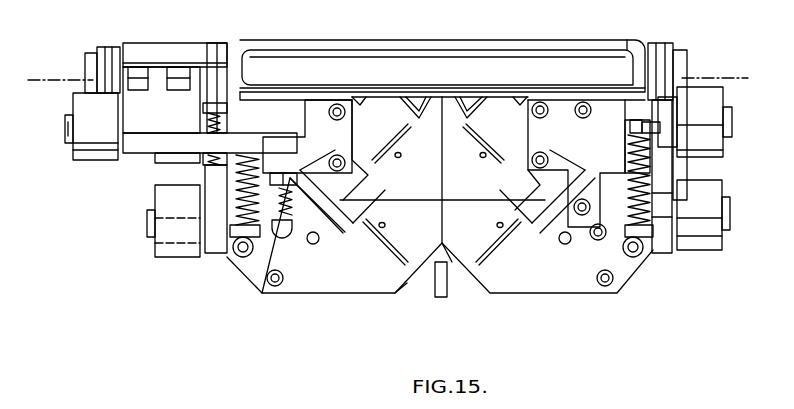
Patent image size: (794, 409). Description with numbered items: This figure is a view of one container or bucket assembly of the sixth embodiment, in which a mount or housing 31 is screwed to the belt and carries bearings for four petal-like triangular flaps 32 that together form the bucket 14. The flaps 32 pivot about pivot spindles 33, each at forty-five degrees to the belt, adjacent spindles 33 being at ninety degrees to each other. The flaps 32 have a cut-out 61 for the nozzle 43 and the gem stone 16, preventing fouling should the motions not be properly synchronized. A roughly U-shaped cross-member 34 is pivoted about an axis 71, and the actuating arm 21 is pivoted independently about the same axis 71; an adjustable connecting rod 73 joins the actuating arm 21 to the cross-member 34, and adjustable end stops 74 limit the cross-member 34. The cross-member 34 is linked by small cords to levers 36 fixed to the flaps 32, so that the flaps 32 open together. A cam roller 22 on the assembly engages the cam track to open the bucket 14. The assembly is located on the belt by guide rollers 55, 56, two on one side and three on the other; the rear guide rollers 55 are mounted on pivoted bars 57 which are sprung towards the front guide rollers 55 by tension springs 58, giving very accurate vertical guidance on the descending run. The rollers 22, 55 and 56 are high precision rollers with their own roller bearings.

The bucket 14 is at (502, 302).
The gem stone 16 is at (453, 265).
The actuating arm 21 is at (142, 143).
The cam roller 22 is at (90, 143).
The mount or housing 31 is at (637, 62).
The flaps 32 is at (425, 181).
The pivot spindles 33 is at (325, 255).
The cross-member 34 is at (420, 65).
The levers 36 is at (375, 107).
The nozzle 43 is at (438, 288).
The guide rollers 55 is at (165, 243).
The guide rollers 56 is at (160, 160).
The pivoted bars 57 is at (668, 107).
The tension springs 58 is at (263, 148).
The cut-out 61 is at (407, 285).
The axis 71 is at (30, 80).
The connecting rod 73 is at (250, 263).
The end stops 74 is at (205, 167).